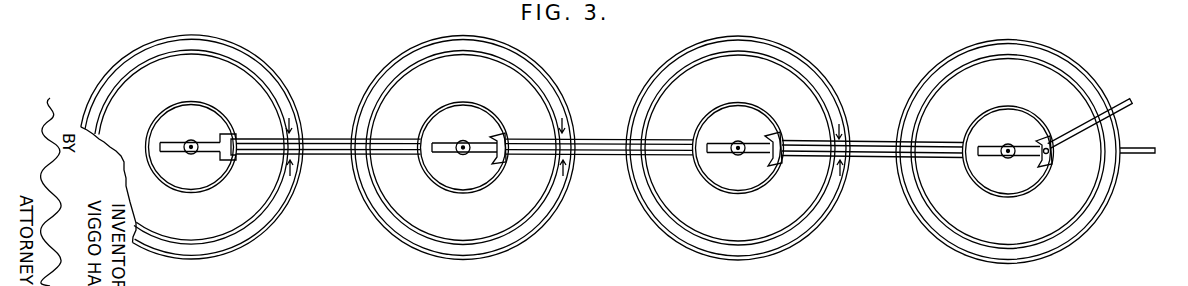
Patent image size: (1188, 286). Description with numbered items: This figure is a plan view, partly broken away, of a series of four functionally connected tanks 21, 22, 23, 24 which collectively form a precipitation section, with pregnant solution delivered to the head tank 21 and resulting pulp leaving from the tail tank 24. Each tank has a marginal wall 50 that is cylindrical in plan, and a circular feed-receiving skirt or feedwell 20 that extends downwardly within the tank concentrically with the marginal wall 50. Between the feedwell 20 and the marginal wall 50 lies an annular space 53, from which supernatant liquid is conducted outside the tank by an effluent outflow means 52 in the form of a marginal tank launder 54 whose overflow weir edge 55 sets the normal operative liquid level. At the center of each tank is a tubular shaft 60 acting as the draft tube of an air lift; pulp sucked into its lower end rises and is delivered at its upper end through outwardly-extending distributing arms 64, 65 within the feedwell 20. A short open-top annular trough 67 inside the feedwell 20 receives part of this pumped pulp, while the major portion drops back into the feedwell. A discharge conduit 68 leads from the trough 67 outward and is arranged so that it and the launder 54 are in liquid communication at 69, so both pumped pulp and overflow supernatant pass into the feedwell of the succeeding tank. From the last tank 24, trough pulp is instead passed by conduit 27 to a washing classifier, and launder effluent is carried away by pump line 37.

The feedwell 20 is at (190, 106).
The tank 21 is at (192, 147).
The tank 22 is at (463, 148).
The tank 23 is at (738, 148).
The tank 24 is at (1008, 152).
The conduit 27 is at (1124, 102).
The pump line 37 is at (1132, 155).
The marginal wall 50 is at (294, 101).
The effluent outflow means 52 is at (361, 74).
The annular space 53 is at (599, 149).
The marginal tank launder 54 is at (110, 79).
The overflow weir edge 55 is at (253, 74).
The tubular shaft 60 is at (192, 152).
The distributing arm 64 is at (174, 142).
The distributing arm 65 is at (205, 142).
The annular trough 67 is at (235, 137).
The discharge conduit 68 is at (235, 158).
The liquid communication 69 is at (299, 139).